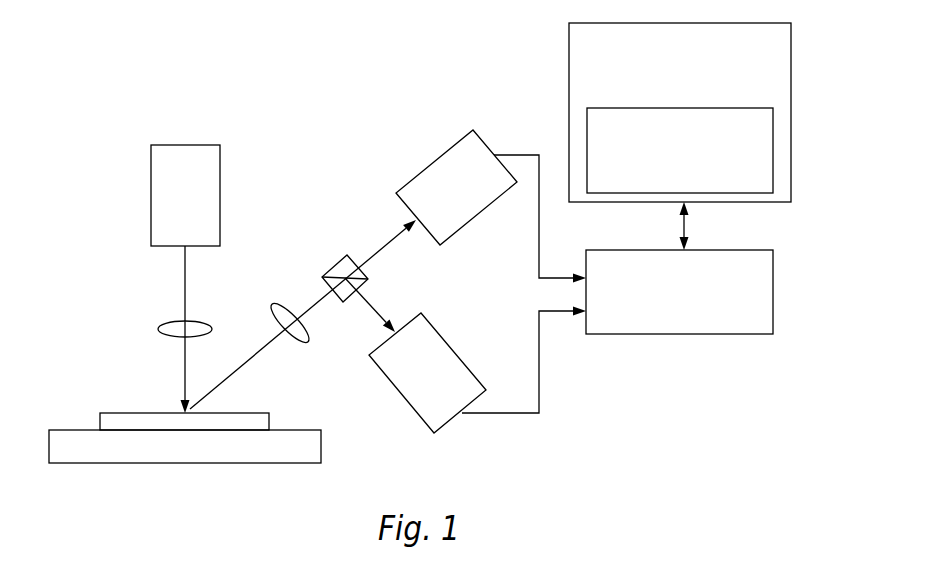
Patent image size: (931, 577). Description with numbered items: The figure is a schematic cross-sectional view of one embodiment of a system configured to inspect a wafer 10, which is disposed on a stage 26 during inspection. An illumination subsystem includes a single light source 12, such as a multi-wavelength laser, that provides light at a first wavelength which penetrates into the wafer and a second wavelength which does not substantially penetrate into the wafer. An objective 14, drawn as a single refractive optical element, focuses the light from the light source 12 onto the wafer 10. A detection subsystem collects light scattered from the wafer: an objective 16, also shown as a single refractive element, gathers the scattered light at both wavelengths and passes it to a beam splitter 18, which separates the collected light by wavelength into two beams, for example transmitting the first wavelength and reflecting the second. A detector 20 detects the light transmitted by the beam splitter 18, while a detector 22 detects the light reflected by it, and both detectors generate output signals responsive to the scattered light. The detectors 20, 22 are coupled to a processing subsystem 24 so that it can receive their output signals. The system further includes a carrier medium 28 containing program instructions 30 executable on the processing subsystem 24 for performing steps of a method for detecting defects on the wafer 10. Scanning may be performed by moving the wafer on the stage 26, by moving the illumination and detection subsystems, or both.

The wafer 10 is at (250, 413).
The light source 12 is at (220, 192).
The objective 14 is at (207, 322).
The objective 16 is at (305, 340).
The beam splitter 18 is at (335, 265).
The detector 20 is at (430, 165).
The detector 22 is at (445, 339).
The processing subsystem 24 is at (773, 287).
The stage 26 is at (321, 452).
The carrier medium 28 is at (791, 52).
The program instructions 30 is at (773, 153).